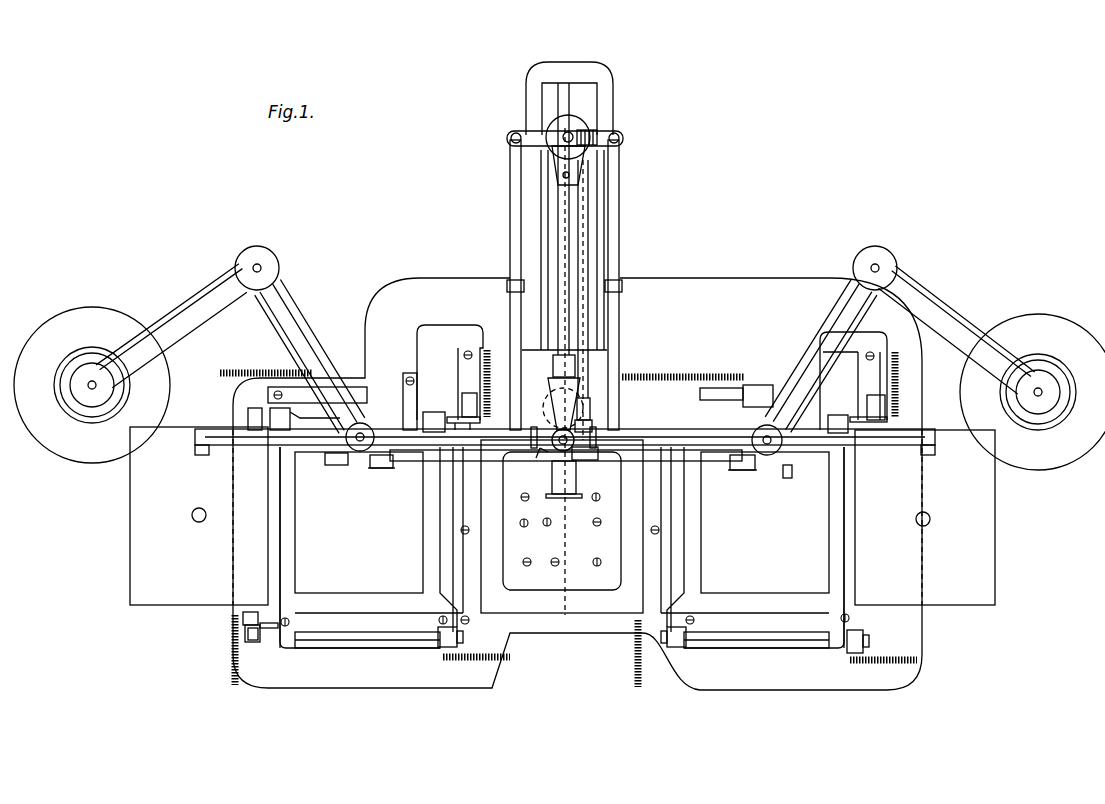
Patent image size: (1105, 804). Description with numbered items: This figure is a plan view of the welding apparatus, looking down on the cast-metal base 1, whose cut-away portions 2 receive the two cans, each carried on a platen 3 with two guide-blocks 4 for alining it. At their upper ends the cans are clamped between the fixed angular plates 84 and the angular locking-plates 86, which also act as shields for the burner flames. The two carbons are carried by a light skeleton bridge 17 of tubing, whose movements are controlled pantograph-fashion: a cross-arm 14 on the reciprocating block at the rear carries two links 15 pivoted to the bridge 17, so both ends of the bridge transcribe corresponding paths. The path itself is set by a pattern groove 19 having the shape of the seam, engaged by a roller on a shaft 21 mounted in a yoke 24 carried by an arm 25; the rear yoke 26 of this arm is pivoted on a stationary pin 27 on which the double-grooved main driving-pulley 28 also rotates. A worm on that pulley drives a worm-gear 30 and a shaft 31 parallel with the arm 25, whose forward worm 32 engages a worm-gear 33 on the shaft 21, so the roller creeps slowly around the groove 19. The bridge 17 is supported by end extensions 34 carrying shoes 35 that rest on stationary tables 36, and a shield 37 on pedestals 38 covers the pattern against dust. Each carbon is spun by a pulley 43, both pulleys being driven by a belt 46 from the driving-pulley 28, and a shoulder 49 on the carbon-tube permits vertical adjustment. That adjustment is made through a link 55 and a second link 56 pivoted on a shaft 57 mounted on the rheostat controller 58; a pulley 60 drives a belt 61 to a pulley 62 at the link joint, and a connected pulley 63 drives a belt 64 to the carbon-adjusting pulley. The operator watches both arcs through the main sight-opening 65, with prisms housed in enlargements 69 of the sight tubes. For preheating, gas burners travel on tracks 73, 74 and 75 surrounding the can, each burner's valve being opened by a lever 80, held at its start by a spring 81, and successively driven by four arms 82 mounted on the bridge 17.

The cast-metal base 1 is at (358, 690).
The cut-away portions 2 is at (562, 547).
The platen 3 is at (766, 745).
The guide-blocks 4 is at (565, 128).
The cross-arm 14 is at (600, 140).
The links 15 is at (512, 205).
The skeleton bridge 17 is at (592, 410).
The groove 19 is at (590, 590).
The shaft 21 is at (572, 449).
The yoke 24 is at (557, 380).
The arm 25 is at (558, 250).
The yoke 26 is at (560, 152).
The stationary pin 27 is at (560, 134).
The main driving-pulley 28 is at (546, 137).
The worm-gear 30 is at (592, 130).
The shaft 31 is at (590, 210).
The worm 32 is at (588, 456).
The worm-gear 33 is at (546, 449).
The extensions 34 is at (247, 445).
The shoes 35 is at (200, 447).
The stationary tables 36 is at (562, 516).
The shield 37 is at (594, 566).
The pedestals 38 is at (531, 526).
The pulley 43 is at (354, 450).
The belt 46 is at (514, 286).
The shoulder 49 is at (760, 455).
The link 55 is at (806, 377).
The link 56 is at (945, 320).
The shaft 57 is at (88, 385).
The controller 58 is at (75, 455).
The pulley 60 is at (1046, 380).
The belt 61 is at (928, 285).
The pulley 62 is at (882, 252).
The pulley 63 is at (872, 247).
The belt 64 is at (836, 300).
The main sight-opening 65 is at (576, 496).
The enlargements 69 is at (381, 470).
The guides or tracks 73 is at (245, 640).
The track or guide 74 is at (464, 365).
The guide or track 75 is at (343, 638).
The lever 80 is at (274, 641).
The spring 81 is at (250, 372).
The arms 82 is at (338, 462).
The angular plates 84 is at (290, 545).
The locking-plates 86 is at (357, 600).